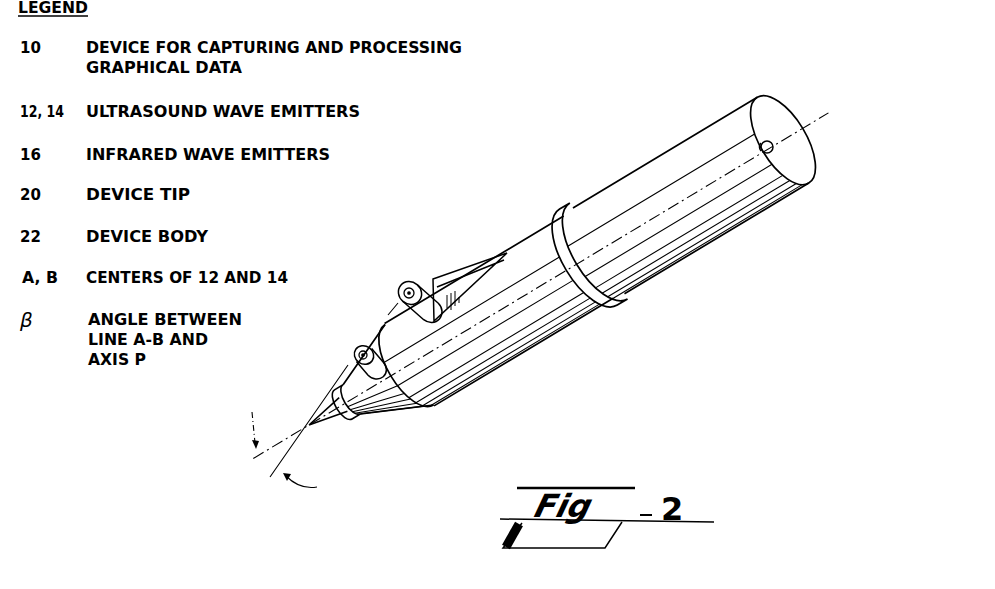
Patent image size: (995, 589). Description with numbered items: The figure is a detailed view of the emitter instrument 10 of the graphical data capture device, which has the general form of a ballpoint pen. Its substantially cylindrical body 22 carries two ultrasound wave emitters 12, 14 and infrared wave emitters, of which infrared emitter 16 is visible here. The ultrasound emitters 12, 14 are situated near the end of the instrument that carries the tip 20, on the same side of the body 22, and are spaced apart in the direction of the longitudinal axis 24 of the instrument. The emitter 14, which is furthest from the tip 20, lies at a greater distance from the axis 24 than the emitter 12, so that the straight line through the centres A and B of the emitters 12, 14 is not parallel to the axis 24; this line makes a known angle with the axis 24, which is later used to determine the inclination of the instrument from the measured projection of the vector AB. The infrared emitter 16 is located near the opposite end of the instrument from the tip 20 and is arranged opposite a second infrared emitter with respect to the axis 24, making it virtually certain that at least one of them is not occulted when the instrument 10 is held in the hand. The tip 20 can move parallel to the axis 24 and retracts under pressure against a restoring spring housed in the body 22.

The instrument 10 is at (541, 274).
The ultrasound wave emitter 12 is at (372, 336).
The ultrasound wave emitter 14 is at (420, 286).
The infrared wave emitter 16 is at (771, 152).
The tip 20 is at (334, 420).
The body 22 is at (700, 240).
The longitudinal axis 24 is at (832, 110).
The centre of emitter 12 A is at (356, 353).
The centre of emitter 14 B is at (400, 293).